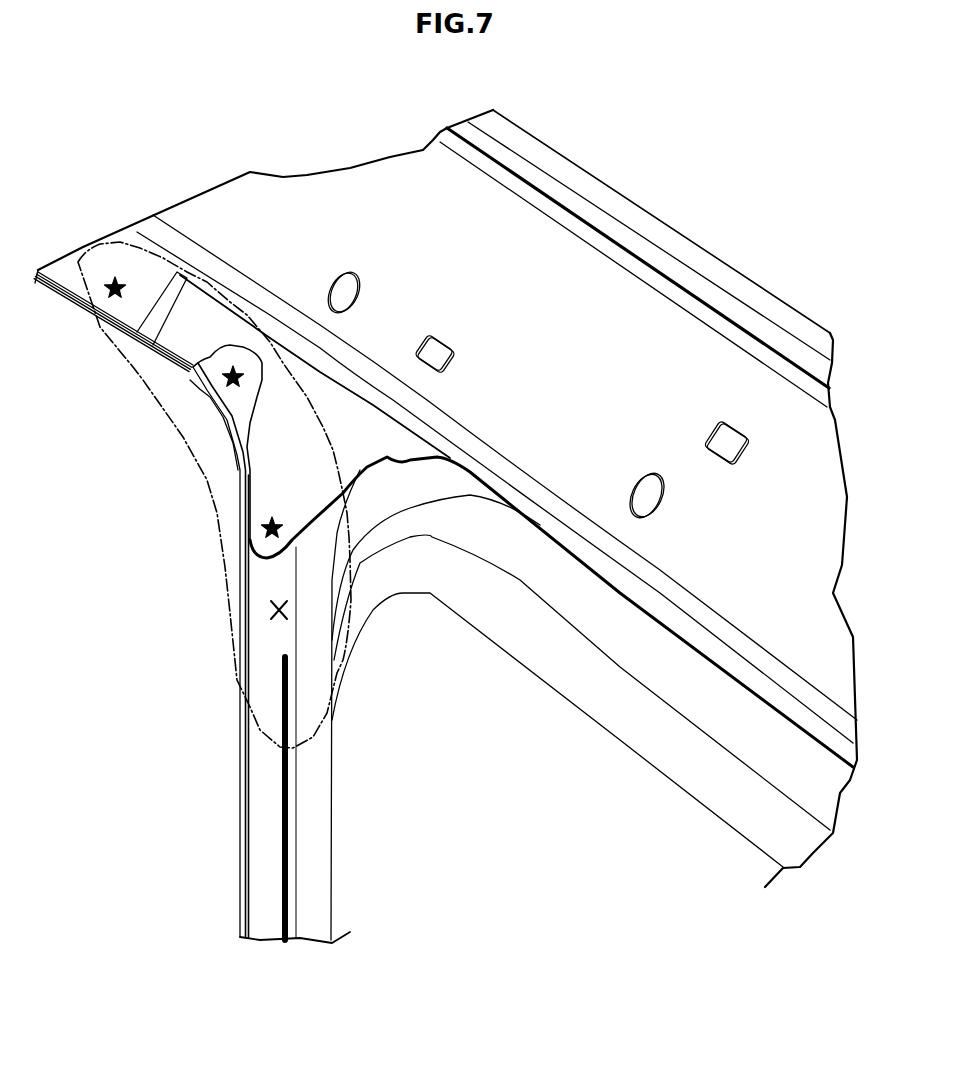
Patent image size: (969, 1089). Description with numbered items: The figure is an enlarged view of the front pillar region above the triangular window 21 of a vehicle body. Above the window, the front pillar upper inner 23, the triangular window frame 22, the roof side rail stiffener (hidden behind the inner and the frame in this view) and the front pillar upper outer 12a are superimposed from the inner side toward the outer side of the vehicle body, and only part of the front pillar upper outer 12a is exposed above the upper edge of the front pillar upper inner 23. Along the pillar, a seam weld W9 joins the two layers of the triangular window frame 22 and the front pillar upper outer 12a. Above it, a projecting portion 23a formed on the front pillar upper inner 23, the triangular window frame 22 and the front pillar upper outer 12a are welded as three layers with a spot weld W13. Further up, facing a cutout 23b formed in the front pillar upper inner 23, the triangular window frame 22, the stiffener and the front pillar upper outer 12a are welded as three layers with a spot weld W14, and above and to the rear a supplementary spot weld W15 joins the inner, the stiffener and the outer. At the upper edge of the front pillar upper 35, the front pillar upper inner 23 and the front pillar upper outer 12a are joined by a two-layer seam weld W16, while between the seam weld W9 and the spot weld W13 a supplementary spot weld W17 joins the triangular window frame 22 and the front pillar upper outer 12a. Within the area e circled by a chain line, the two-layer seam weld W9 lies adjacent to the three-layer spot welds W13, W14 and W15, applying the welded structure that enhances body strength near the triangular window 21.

The front pillar upper outer 12a is at (762, 307).
The front pillar upper 35 is at (573, 160).
The seam weld W16 is at (660, 270).
The front pillar upper inner 23 is at (588, 302).
The cutout 23b is at (215, 345).
The projecting portion 23a is at (273, 483).
The triangular window 21 is at (551, 698).
The triangular window frame 22 is at (663, 747).
The area e is at (197, 460).
The supplementary spot weld W15 is at (107, 287).
The spot weld W14 is at (223, 388).
The spot weld W13 is at (267, 533).
The supplementary spot weld W17 is at (270, 613).
The seam weld W9 is at (280, 837).